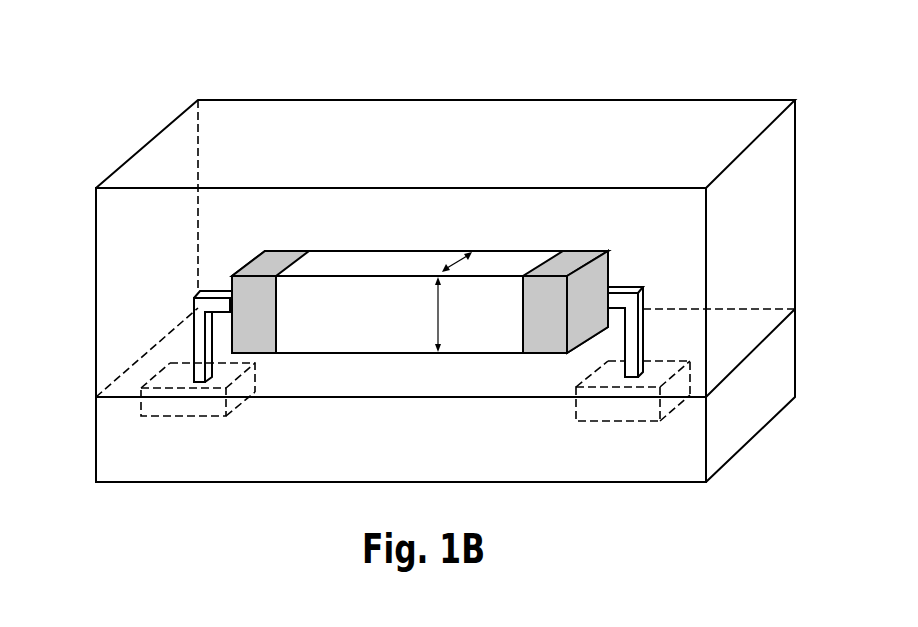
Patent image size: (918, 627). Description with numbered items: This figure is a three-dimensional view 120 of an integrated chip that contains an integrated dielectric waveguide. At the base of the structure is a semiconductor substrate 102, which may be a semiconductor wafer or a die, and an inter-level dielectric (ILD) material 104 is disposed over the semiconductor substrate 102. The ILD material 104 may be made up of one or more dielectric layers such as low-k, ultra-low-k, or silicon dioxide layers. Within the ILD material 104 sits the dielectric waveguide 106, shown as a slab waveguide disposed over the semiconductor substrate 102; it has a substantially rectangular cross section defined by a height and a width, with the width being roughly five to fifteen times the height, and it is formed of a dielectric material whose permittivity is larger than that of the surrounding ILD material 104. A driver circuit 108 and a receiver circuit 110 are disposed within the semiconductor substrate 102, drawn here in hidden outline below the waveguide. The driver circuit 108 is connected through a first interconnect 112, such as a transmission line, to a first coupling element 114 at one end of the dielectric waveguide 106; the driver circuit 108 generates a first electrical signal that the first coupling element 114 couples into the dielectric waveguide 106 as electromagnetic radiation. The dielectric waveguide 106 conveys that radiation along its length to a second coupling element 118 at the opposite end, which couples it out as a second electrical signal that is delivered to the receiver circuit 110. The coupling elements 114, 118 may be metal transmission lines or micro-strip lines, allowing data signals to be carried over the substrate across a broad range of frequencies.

The three-dimensional view 120 is at (104, 58).
The inter-level dielectric (ILD) material 104 is at (795, 214).
The semiconductor substrate 102 is at (795, 353).
The dielectric waveguide 106 is at (422, 250).
The first coupling element 114 is at (285, 249).
The second coupling element 118 is at (577, 250).
The first interconnect 112 is at (211, 289).
The driver circuit 108 is at (205, 417).
The receiver circuit 110 is at (639, 422).